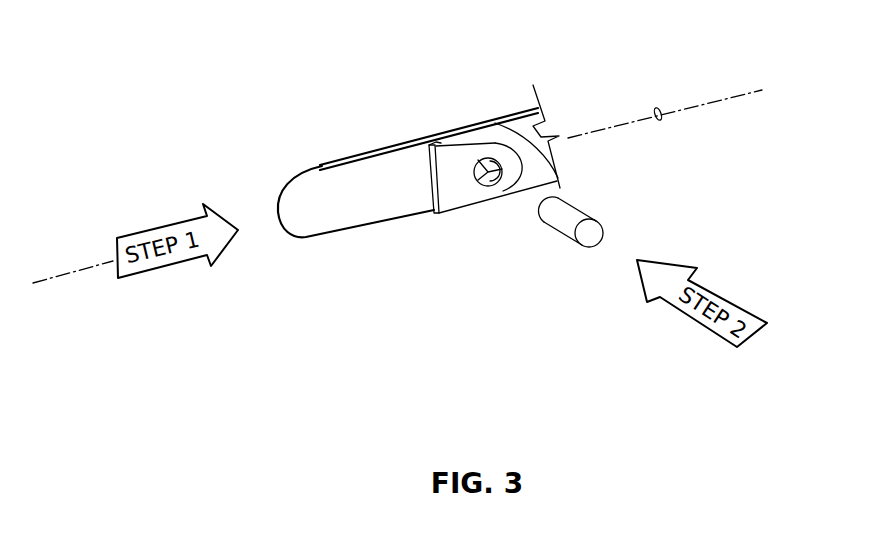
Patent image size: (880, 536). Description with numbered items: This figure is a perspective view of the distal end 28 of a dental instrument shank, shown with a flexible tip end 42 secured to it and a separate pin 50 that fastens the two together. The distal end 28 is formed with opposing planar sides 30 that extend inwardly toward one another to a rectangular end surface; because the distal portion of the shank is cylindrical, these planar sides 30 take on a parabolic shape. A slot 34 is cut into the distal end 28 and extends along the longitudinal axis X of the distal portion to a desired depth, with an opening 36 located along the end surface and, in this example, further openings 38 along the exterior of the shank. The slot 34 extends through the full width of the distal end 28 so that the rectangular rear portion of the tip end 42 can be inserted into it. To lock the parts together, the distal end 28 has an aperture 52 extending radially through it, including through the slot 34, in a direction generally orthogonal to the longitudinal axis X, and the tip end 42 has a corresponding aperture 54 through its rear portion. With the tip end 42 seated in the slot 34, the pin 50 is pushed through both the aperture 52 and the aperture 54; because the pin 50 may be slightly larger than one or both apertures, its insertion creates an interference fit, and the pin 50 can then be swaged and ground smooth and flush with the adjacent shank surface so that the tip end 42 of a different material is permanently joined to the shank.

The distal end 28 is at (544, 121).
The planar sides 30 is at (437, 193).
The slot 34 is at (424, 144).
The opening 36 is at (429, 187).
The openings 38 is at (558, 178).
The tip end 42 is at (322, 175).
The pin 50 is at (568, 246).
The aperture 52 is at (478, 158).
The aperture 54 is at (491, 188).
The longitudinal axis X is at (659, 120).